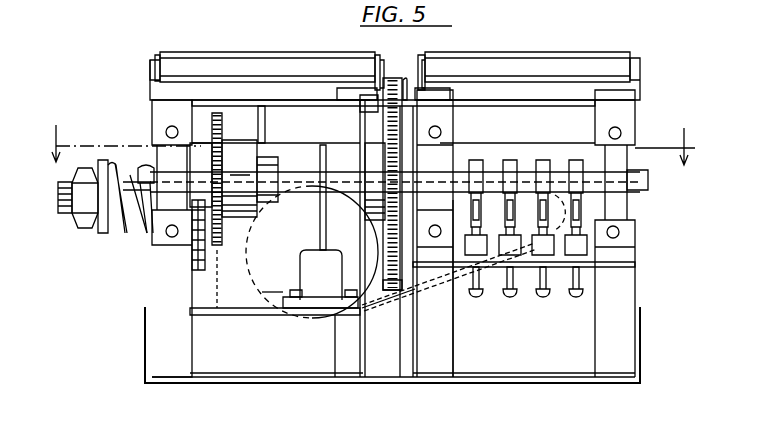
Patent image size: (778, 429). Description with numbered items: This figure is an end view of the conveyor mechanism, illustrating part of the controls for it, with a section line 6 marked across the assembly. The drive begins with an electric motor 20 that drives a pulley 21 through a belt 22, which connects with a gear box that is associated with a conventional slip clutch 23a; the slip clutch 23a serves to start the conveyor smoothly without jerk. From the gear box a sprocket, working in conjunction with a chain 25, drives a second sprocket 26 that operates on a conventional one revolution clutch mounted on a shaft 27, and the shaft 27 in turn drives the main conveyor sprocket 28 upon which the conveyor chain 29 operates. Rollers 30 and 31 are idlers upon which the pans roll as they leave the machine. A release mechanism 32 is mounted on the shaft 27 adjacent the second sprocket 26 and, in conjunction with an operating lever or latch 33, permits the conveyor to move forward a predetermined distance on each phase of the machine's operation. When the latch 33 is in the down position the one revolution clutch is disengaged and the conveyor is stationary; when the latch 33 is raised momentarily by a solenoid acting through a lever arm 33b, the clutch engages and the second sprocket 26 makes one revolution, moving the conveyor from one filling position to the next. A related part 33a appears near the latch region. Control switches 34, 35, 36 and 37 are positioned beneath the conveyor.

The section line 6- 6 is at (370, 145).
The motor 20 is at (550, 224).
The pulley 21 is at (385, 307).
The belt 22 is at (305, 316).
The slip clutch 23a is at (200, 145).
The chain 25 is at (193, 243).
The second sprocket 26 is at (218, 250).
The shaft 27 is at (343, 188).
The main conveyor sprocket 28 is at (397, 275).
The chain 29 is at (392, 78).
The roller 30 is at (276, 52).
The roller 31 is at (515, 52).
The release mechanism 32 is at (263, 165).
The operating lever or latch 33 is at (265, 122).
The cam lower portion 33a is at (277, 297).
The lever arm 33b is at (322, 235).
The control switch 34 is at (474, 160).
The control switch 35 is at (510, 160).
The control switch 36 is at (537, 160).
The control switch 37 is at (574, 160).